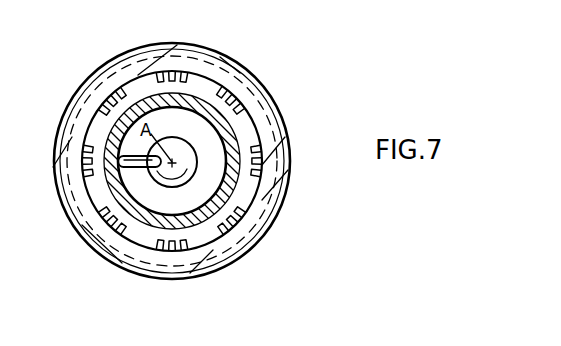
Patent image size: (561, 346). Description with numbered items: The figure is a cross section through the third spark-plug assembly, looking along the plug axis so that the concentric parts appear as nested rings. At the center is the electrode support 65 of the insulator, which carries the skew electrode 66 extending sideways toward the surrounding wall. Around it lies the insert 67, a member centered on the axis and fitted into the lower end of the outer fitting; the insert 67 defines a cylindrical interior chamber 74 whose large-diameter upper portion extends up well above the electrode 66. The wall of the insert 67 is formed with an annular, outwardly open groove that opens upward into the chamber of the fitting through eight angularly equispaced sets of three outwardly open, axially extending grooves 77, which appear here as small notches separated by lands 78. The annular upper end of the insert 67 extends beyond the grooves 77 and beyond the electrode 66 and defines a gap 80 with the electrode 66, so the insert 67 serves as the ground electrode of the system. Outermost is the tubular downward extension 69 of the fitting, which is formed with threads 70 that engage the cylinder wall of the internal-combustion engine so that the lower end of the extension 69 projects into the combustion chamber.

The electrode support 65 is at (180, 166).
The skew electrode 66 is at (78, 192).
The insert 67 is at (228, 135).
The tubular downward extension 69 is at (262, 200).
The threads 70 is at (288, 170).
The cylindrical interior chamber 74 is at (200, 97).
The axially extending grooves 77 is at (238, 100).
The lands 78 is at (139, 74).
The gap 80 is at (84, 172).